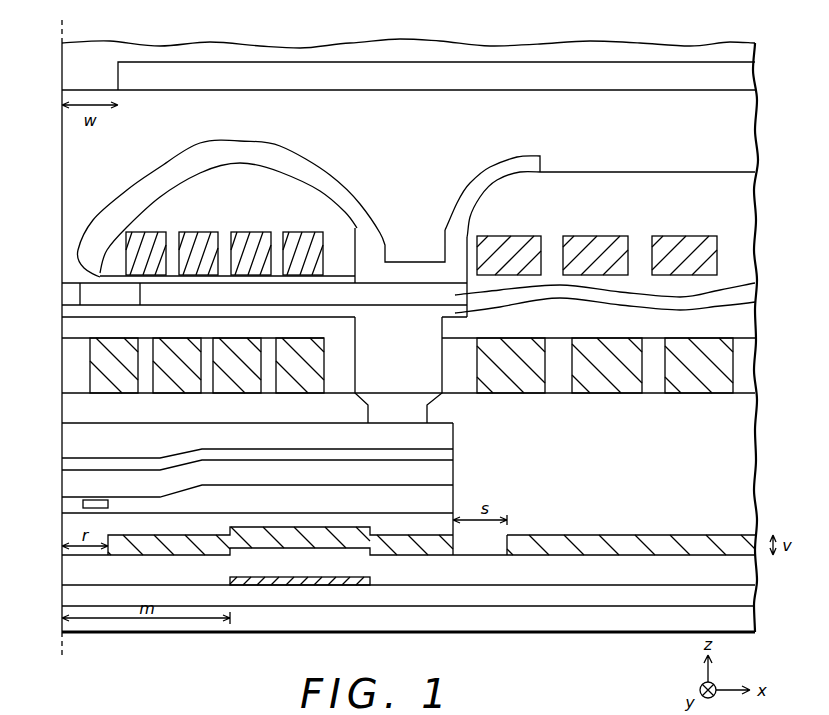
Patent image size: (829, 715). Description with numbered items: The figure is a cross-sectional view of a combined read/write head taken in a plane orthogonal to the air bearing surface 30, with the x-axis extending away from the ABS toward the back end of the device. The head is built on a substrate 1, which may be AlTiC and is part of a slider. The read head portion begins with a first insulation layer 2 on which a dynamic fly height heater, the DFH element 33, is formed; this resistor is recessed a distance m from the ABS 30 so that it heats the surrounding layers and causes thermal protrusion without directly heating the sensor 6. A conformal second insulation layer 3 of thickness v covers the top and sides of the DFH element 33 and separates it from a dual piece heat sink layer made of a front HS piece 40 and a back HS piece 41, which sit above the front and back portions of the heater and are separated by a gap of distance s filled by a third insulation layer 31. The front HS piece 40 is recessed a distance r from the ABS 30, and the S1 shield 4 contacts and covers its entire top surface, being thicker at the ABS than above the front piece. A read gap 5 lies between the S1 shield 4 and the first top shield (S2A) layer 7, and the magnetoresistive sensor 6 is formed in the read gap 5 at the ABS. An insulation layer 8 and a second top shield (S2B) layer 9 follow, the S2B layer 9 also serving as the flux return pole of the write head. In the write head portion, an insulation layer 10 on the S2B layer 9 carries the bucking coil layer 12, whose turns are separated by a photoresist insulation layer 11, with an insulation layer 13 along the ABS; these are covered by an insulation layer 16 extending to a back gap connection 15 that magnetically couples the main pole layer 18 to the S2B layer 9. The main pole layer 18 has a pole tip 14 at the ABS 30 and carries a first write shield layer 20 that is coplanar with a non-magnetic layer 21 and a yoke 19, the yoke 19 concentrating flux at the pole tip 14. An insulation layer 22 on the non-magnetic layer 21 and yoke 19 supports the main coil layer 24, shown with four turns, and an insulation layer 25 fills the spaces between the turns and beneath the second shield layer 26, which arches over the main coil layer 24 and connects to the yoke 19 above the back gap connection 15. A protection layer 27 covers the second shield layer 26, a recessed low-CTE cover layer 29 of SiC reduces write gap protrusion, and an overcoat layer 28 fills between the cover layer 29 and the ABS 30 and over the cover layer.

The substrate 1 is at (752, 620).
The first insulation layer 2 is at (68, 595).
The second insulation layer 3 is at (68, 565).
The S1 shield 4 is at (68, 540).
The read gap 5 is at (122, 504).
The sensor 6 is at (83, 504).
The first top shield (S2A) layer 7 is at (68, 483).
The insulation layer 8 is at (68, 462).
The second top shield (S2B) layer 9 is at (68, 442).
The insulation layer 10 is at (68, 412).
The insulation layer 11 is at (80, 393).
The bucking coil layer 12 is at (147, 380).
The insulation layer 13 is at (70, 352).
The pole tip 14 is at (68, 310).
The back gap connection 15 is at (408, 412).
The insulation layer 16 is at (68, 332).
The main pole layer 18 is at (753, 303).
The yoke 19 is at (753, 284).
The first write shield layer 20 is at (68, 293).
The non-magnetic layer 21 is at (92, 290).
The insulation layer 22 is at (100, 277).
The main coil layer 24 is at (163, 233).
The insulation layer 25 is at (110, 250).
The second shield layer 26 is at (135, 185).
The protection layer 27 is at (68, 127).
The overcoat layer 28 is at (72, 70).
The cover layer 29 is at (740, 80).
The air bearing surface 30 is at (62, 22).
The third insulation layer 31 is at (745, 478).
The DFH element 33 is at (295, 588).
The front HS piece 40 is at (393, 542).
The back HS piece 41 is at (555, 548).